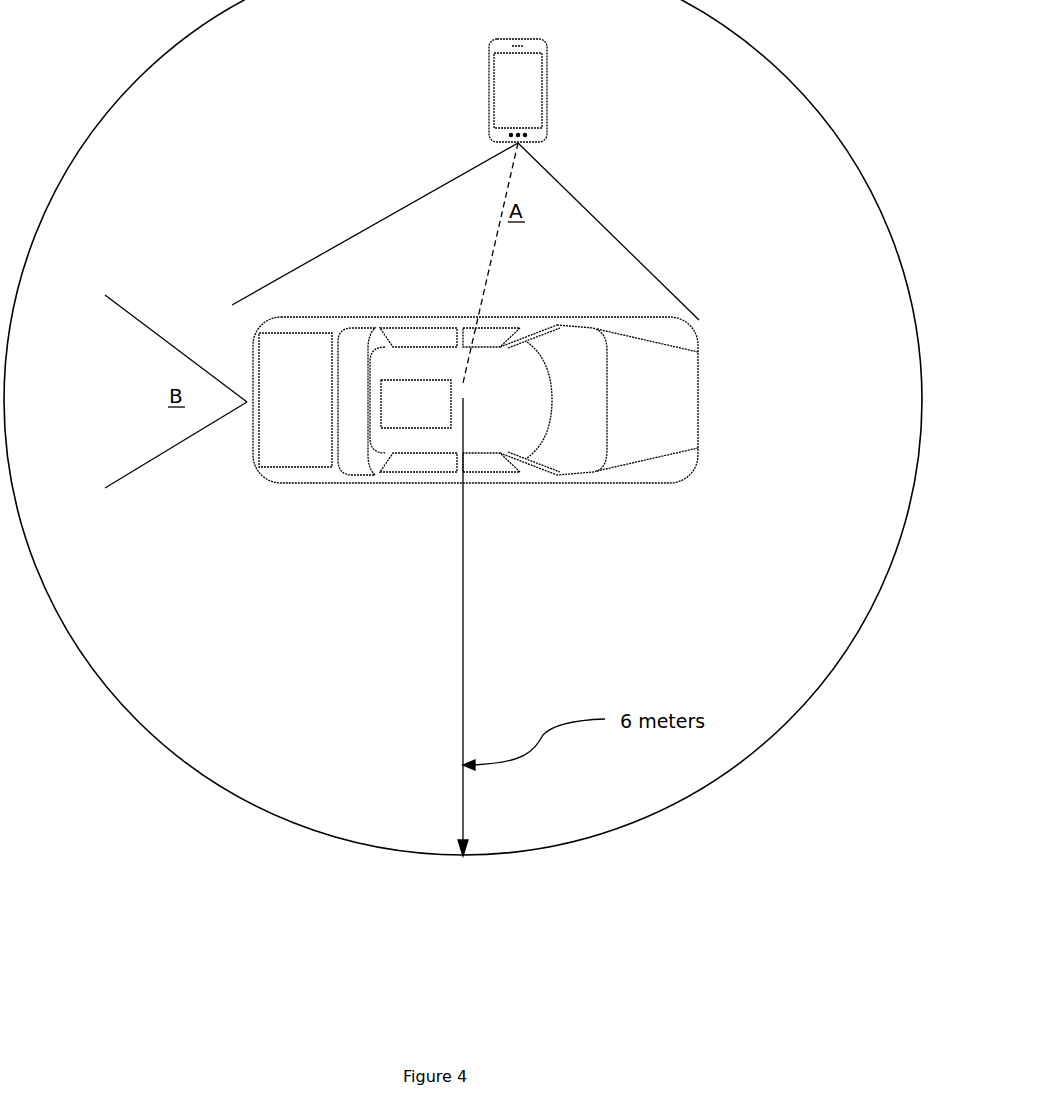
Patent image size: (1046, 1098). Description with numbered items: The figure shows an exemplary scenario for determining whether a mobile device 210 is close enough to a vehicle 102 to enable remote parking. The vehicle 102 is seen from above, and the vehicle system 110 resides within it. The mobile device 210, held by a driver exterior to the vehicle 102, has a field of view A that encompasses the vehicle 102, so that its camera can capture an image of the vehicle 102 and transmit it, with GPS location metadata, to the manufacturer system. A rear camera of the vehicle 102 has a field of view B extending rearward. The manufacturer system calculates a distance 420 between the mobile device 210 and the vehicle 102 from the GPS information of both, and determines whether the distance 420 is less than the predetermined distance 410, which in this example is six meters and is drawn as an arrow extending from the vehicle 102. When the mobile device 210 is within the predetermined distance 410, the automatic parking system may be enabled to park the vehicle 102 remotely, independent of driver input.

The mobile device 210 is at (489, 90).
The distance 420 is at (484, 275).
The vehicle 102 is at (704, 402).
The vehicle system 110 is at (416, 404).
The predetermined distance 410 is at (455, 703).